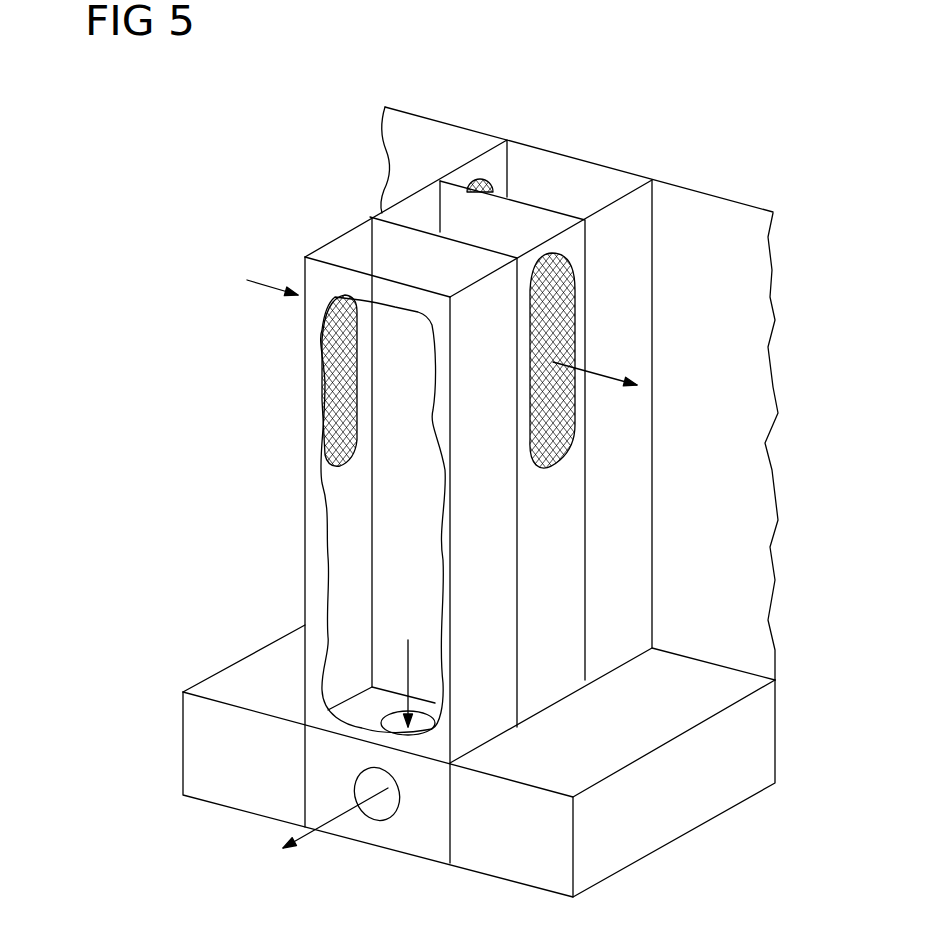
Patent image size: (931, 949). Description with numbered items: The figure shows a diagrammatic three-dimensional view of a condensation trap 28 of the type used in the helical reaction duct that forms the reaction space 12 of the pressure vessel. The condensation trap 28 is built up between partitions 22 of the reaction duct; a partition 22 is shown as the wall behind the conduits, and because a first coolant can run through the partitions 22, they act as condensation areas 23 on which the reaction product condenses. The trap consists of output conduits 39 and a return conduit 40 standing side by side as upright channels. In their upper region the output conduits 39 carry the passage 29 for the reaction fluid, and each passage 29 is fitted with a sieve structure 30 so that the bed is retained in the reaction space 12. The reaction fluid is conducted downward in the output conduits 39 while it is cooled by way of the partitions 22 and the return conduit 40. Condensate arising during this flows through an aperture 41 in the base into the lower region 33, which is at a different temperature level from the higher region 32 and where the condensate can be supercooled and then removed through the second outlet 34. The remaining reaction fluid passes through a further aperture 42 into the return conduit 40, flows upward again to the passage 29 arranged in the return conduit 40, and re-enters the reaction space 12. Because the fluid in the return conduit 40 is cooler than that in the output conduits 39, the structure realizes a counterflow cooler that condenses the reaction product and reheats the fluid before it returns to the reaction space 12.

The reaction space 12 is at (723, 527).
The partition 22 is at (732, 228).
The condensation area 23 is at (728, 320).
The condensation trap 28 is at (565, 150).
The passage 29 is at (487, 173).
The sieve structure 30 is at (342, 377).
The higher region 32 is at (303, 256).
The lower region 33 is at (182, 793).
The second outlet 34 is at (380, 810).
The output conduit 39 is at (357, 580).
The return conduit 40 is at (422, 213).
The aperture 41 is at (398, 715).
The further aperture 42 is at (433, 598).